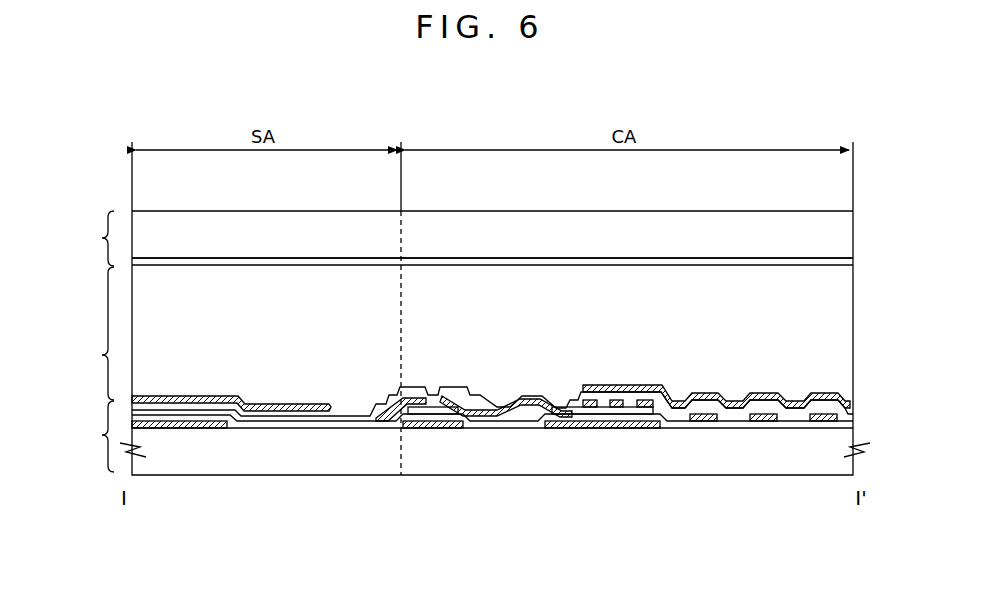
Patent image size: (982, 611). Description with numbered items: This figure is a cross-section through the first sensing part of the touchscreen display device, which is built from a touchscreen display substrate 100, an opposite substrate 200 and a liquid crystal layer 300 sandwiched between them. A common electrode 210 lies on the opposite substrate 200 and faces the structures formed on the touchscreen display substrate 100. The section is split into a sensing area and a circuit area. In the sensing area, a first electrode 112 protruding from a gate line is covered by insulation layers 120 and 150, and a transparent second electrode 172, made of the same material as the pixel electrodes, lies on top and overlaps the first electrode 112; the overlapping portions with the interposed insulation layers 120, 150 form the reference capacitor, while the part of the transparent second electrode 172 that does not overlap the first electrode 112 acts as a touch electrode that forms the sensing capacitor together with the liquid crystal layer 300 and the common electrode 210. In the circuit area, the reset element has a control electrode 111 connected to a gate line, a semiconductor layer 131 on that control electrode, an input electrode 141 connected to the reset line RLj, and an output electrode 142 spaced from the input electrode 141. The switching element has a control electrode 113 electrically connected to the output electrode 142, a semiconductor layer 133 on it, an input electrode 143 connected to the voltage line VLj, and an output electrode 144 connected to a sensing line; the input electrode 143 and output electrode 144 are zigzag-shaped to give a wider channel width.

The touchscreen display substrate 100 is at (88, 436).
The opposite substrate 200 is at (88, 238).
The liquid crystal layer 300 is at (88, 333).
The common electrode 210 is at (631, 262).
The first electrode 112 is at (176, 430).
The insulation layer 150 is at (266, 430).
The insulation layer 120 is at (322, 430).
The input electrode 141 is at (390, 430).
The control electrode 111 is at (420, 430).
The semiconductor layer 131 is at (438, 430).
The output electrode 142 is at (498, 430).
The control electrode 113 is at (552, 430).
The semiconductor layer 133 is at (582, 430).
The input electrode 143 is at (633, 430).
The output electrode 144 is at (700, 393).
The transparent second electrode 172 is at (225, 396).
The reset line RLj is at (758, 430).
The voltage line VLj is at (817, 430).